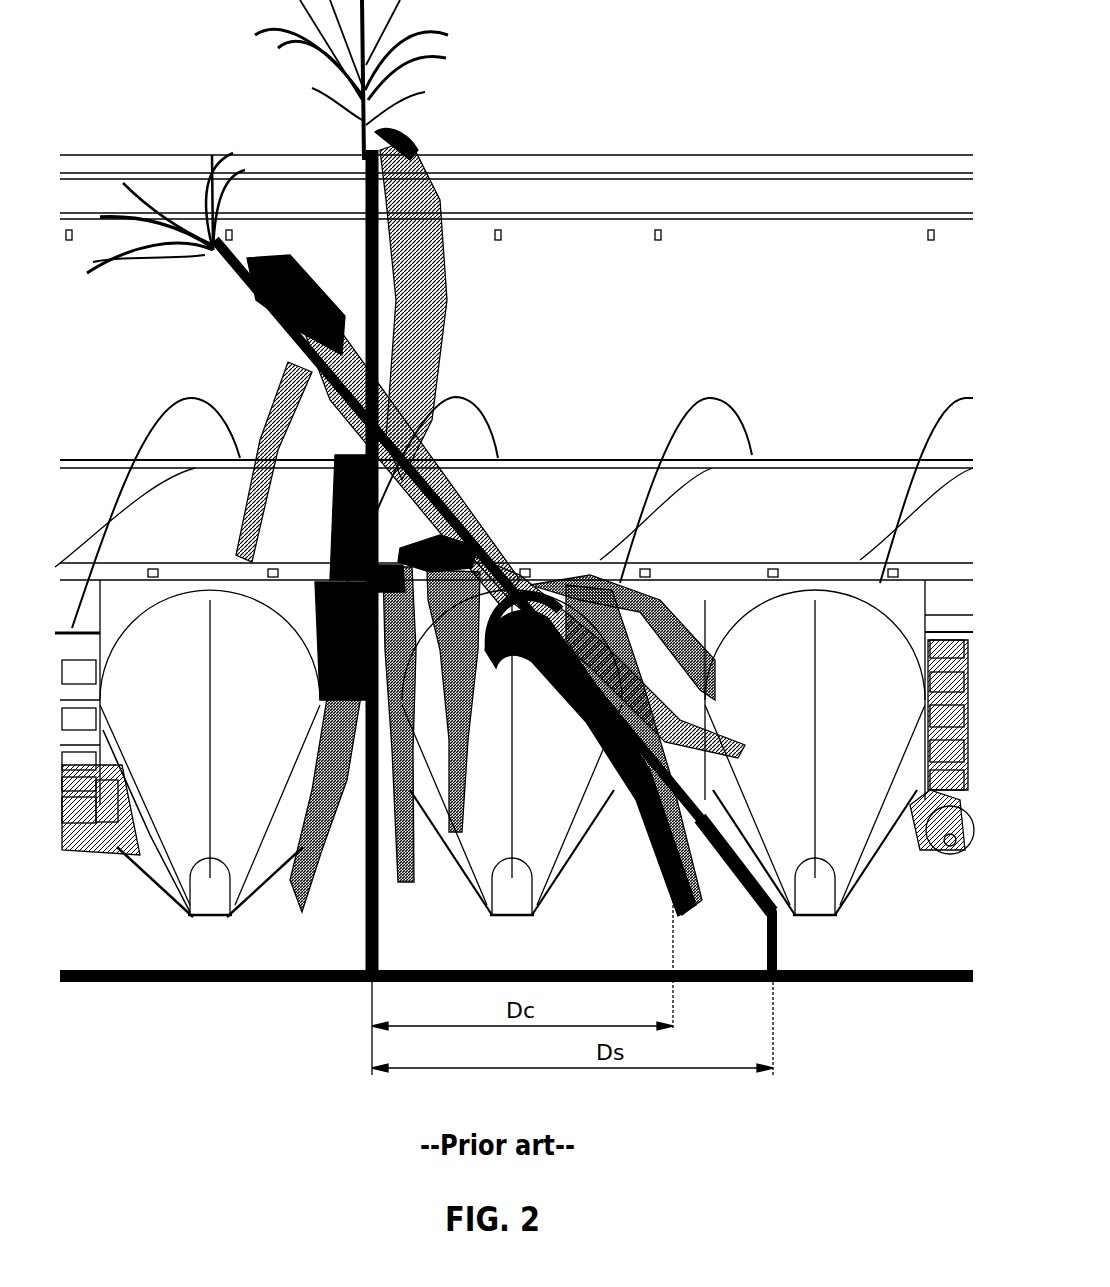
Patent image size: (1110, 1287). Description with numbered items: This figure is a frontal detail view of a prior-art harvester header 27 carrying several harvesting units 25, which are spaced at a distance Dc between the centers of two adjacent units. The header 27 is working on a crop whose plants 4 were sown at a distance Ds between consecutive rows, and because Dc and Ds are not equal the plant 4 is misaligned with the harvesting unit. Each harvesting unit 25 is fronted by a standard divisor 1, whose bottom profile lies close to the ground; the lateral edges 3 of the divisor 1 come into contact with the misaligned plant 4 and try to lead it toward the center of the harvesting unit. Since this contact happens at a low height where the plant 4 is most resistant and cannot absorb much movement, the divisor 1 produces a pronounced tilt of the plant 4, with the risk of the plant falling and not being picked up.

The divisor 1 is at (180, 815).
The lateral edges 3 is at (860, 880).
The plant 4 is at (748, 930).
The harvesting units 25 is at (937, 868).
The header 27 is at (736, 152).